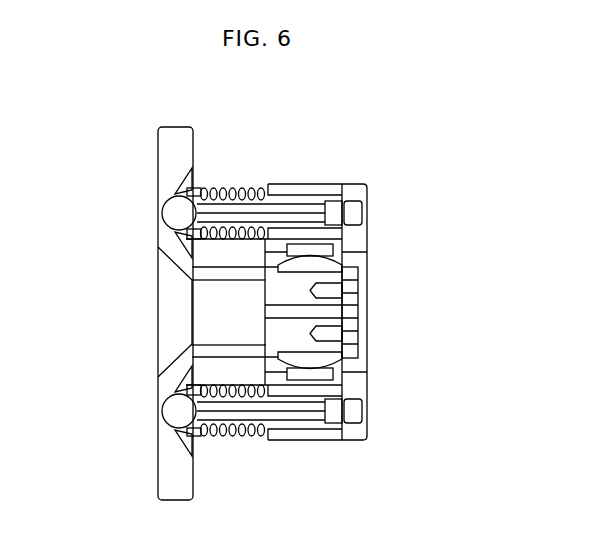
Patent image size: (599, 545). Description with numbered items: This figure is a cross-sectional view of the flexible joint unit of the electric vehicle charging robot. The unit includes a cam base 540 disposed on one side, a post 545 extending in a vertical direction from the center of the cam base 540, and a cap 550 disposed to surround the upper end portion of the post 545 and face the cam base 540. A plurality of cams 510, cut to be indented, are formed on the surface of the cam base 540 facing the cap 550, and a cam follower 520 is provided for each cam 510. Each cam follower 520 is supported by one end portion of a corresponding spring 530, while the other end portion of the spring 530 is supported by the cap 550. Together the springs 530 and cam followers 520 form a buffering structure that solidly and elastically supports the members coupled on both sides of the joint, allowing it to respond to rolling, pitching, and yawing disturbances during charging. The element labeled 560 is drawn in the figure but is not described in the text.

The cam 510 is at (178, 173).
The cam follower 520 is at (166, 212).
The spring 530 is at (235, 187).
The cam base 540 is at (165, 478).
The post 545 is at (362, 276).
The cap 550 is at (357, 388).
The pressing member 560 is at (367, 251).